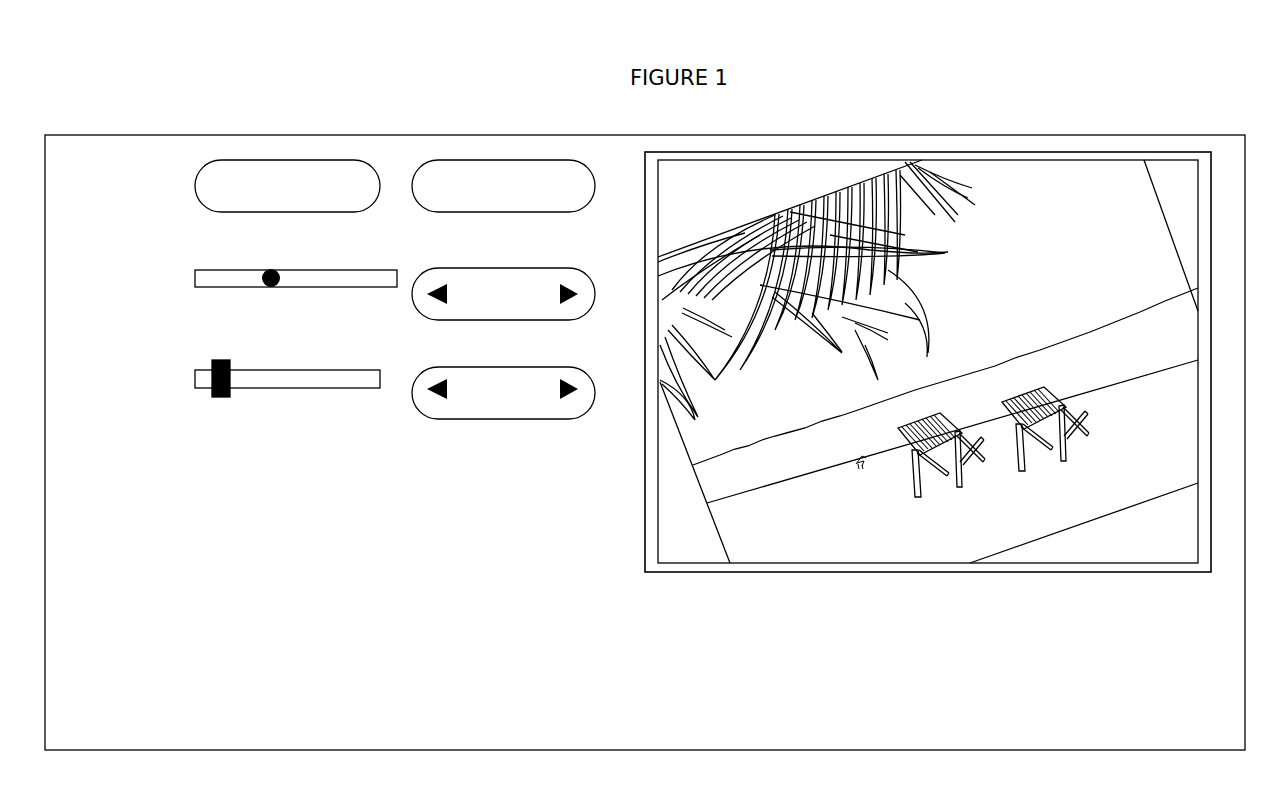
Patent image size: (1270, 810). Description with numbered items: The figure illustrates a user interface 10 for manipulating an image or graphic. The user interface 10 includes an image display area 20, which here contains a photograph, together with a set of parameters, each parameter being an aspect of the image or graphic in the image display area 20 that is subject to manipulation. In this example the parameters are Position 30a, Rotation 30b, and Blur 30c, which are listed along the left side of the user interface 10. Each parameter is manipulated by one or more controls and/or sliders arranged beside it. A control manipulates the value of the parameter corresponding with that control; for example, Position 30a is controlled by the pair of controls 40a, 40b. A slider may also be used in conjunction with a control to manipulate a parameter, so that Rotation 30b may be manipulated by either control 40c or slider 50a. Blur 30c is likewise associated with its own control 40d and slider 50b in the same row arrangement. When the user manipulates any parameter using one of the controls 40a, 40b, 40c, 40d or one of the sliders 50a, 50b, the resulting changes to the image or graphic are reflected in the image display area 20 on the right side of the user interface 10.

The user interface 10 is at (1031, 78).
The image display area 20 is at (1106, 577).
The Position parameter 30a is at (113, 197).
The Rotation parameter 30b is at (113, 296).
The Blur parameter 30c is at (113, 397).
The control 40a is at (289, 214).
The control 40b is at (505, 214).
The control 40c is at (506, 321).
The control 40d is at (506, 420).
The slider 50a is at (304, 289).
The slider 50b is at (290, 389).